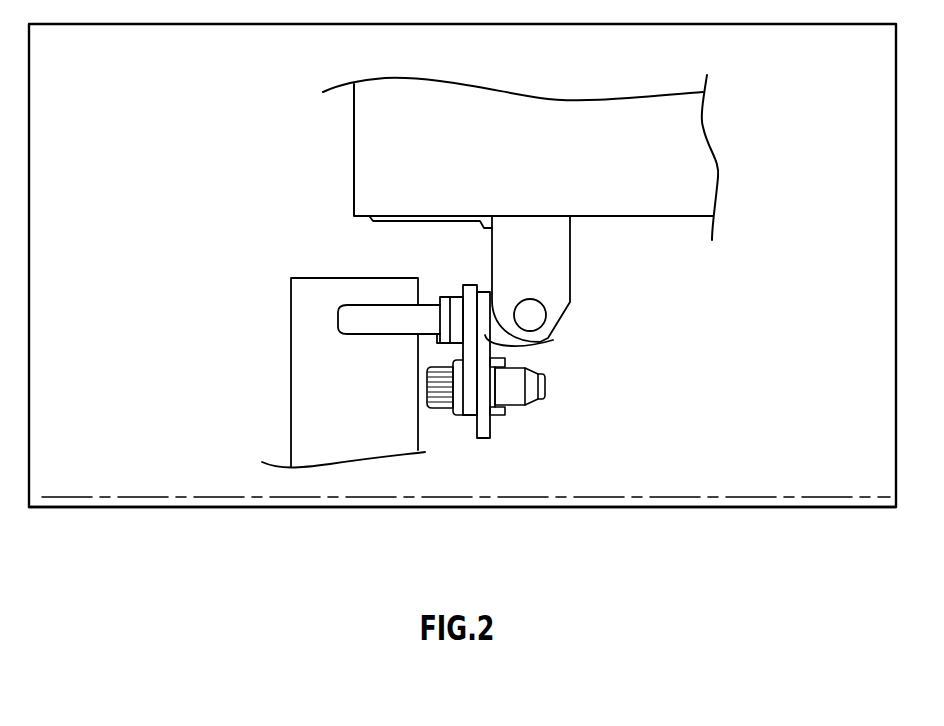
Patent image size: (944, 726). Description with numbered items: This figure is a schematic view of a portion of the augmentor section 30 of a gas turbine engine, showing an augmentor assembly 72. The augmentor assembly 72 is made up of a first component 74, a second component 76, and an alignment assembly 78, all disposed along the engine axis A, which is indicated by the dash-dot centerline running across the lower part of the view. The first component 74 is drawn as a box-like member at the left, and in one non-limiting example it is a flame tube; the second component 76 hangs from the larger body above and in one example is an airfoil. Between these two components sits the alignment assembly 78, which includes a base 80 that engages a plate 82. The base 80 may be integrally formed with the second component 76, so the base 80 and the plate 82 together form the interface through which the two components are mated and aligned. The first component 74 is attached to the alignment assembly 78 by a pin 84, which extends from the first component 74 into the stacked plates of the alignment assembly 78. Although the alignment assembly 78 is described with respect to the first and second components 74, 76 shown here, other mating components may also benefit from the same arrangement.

The augmentor section 30 is at (702, 507).
The augmentor assembly 72 is at (623, 378).
The first component 74 is at (322, 329).
The second component 76 is at (557, 258).
The alignment assembly 78 is at (535, 438).
The base 80 is at (388, 222).
The plate 82 is at (470, 303).
The pin 84 is at (495, 320).
The engine axis A is at (89, 497).